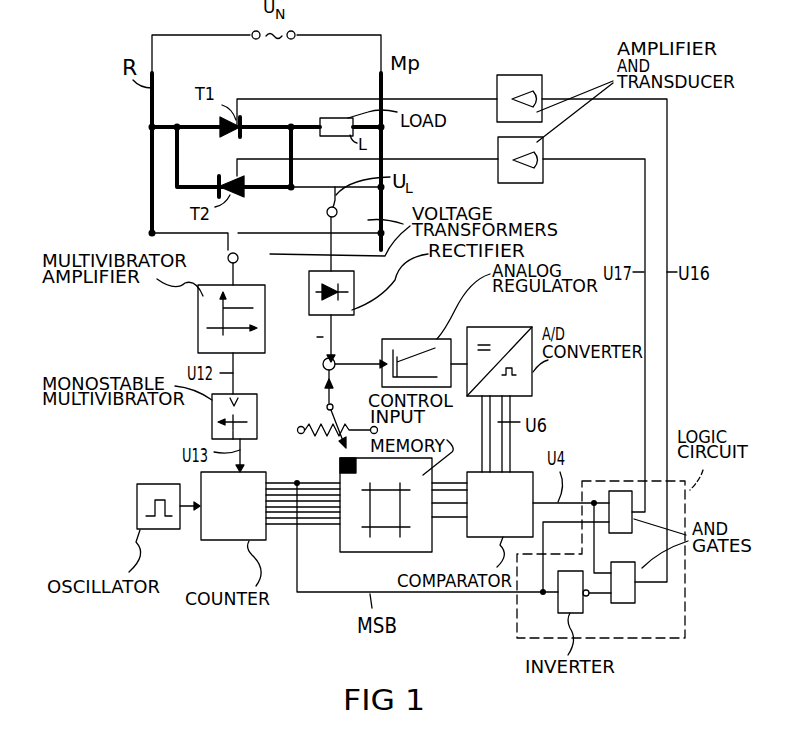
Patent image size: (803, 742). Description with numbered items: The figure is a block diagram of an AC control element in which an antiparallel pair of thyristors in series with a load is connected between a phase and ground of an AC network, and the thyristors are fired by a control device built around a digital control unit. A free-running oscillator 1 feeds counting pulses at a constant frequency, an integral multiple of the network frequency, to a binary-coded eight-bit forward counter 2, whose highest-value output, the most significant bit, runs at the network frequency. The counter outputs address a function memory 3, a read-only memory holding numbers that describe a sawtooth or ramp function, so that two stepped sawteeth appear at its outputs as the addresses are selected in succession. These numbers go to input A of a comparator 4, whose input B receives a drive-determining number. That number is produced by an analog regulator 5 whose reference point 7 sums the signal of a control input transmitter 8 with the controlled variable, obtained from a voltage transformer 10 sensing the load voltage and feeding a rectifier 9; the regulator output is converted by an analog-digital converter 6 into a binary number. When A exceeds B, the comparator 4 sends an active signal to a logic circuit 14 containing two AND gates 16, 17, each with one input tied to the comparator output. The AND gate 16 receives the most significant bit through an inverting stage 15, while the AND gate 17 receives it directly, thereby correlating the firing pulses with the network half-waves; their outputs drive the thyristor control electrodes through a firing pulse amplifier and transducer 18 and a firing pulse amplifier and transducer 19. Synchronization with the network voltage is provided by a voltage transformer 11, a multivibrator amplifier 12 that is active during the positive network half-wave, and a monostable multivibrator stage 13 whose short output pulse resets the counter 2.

The oscillator 1 is at (159, 530).
The counter 2 is at (232, 540).
The function memory 3 is at (387, 552).
The comparator 4 is at (492, 537).
The analog regulator 5 is at (413, 339).
The analog-digital converter 6 is at (502, 327).
The reference point 7 is at (322, 364).
The control input transmitter 8 is at (353, 423).
The rectifier 9 is at (356, 290).
The voltage transformer 10 is at (338, 214).
The voltage transformer 11 is at (247, 254).
The multivibrator amplifier 12 is at (198, 317).
The monostable multivibrator stage 13 is at (212, 413).
The logic circuit 14 is at (686, 580).
The inverting stage 15 is at (558, 606).
The AND gate 16 is at (620, 603).
The AND gate 17 is at (630, 533).
The firing pulse amplifier and transducer 18 is at (543, 88).
The firing pulse amplifier and transducer 19 is at (543, 150).